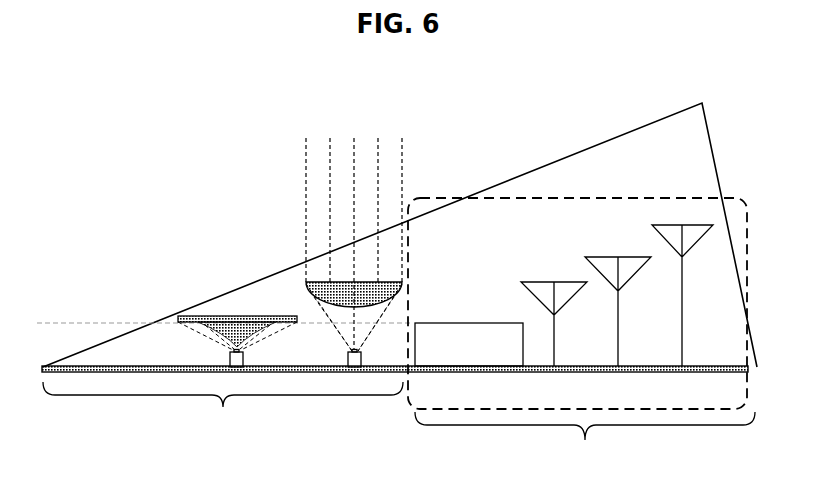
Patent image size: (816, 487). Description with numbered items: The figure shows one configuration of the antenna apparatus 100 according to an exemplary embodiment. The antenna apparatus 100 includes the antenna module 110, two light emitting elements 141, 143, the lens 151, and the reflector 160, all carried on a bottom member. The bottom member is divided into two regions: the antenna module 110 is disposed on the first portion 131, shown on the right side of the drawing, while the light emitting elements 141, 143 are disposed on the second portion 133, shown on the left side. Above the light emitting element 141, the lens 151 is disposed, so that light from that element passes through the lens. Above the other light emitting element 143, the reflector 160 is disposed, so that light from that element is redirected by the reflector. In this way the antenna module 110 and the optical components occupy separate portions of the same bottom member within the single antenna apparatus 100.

The antenna apparatus 100 is at (447, 108).
The antenna module 110 is at (740, 198).
The first portion 131 is at (587, 304).
The second portion 133 is at (223, 289).
The light emitting element 141 is at (346, 361).
The light emitting element 143 is at (228, 361).
The lens 151 is at (320, 282).
The reflector 160 is at (212, 316).